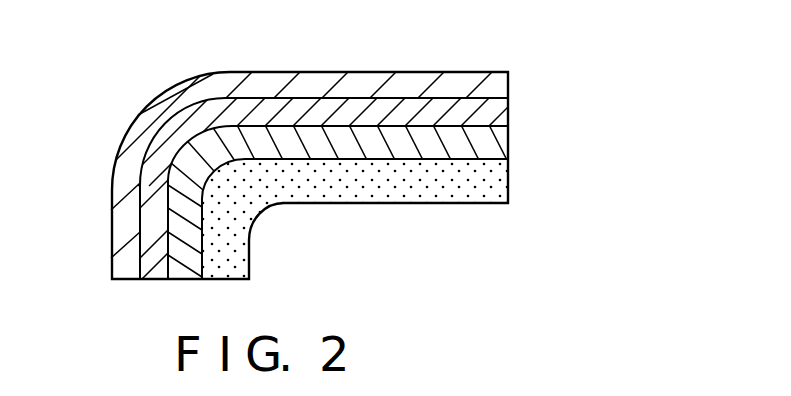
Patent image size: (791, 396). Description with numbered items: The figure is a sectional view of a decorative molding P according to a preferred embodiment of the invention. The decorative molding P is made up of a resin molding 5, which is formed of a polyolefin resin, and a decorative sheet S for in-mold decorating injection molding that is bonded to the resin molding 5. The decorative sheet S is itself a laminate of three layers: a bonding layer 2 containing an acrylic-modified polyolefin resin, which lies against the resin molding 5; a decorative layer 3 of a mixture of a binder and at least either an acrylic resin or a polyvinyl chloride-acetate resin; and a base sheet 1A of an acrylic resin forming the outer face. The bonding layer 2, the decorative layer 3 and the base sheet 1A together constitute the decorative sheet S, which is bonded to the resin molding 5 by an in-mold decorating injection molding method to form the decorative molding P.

The base sheet 1A is at (500, 83).
The decorative layer 3 is at (502, 102).
The bonding layer 2 is at (375, 198).
The resin molding 5 is at (497, 180).
The decorative sheet S is at (367, 160).
The decorative molding P is at (502, 240).